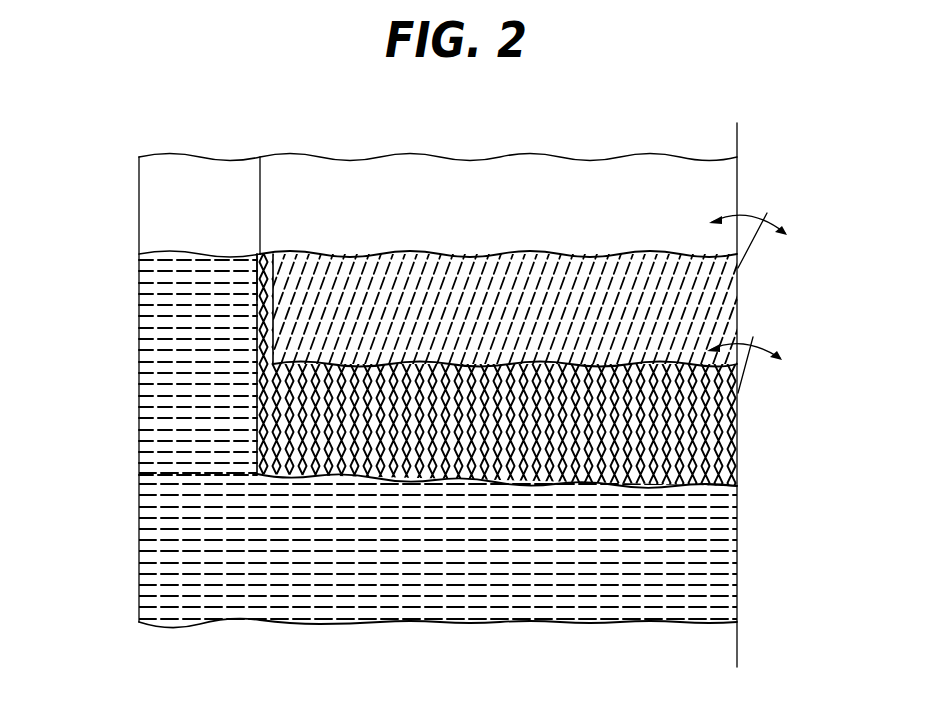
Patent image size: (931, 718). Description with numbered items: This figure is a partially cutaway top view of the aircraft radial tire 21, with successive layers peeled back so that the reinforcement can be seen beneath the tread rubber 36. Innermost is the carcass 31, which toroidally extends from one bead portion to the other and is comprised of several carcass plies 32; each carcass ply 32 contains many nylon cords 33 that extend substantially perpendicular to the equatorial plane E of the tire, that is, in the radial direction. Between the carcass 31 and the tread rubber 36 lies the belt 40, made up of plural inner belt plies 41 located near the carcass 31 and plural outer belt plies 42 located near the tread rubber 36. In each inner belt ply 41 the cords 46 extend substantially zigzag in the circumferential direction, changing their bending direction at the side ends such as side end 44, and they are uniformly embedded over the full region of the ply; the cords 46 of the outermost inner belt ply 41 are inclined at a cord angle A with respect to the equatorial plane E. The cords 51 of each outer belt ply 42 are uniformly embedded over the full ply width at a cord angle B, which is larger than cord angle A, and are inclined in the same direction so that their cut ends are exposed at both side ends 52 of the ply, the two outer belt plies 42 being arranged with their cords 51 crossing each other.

The radial tire 21 is at (218, 157).
The carcass 31 is at (136, 533).
The carcass plies 32 is at (145, 368).
The nylon cords 33 is at (142, 436).
The tread rubber 36 is at (490, 158).
The belt 40 is at (748, 391).
The inner belt plies 41 is at (715, 470).
The cords 46 is at (715, 484).
The outer belt plies 42 is at (510, 256).
The side end 44 is at (257, 272).
The cords 51 is at (418, 270).
The side ends 52 is at (270, 256).
The cord angle A is at (744, 351).
The cord angle B is at (748, 227).
The equatorial plane E is at (737, 138).